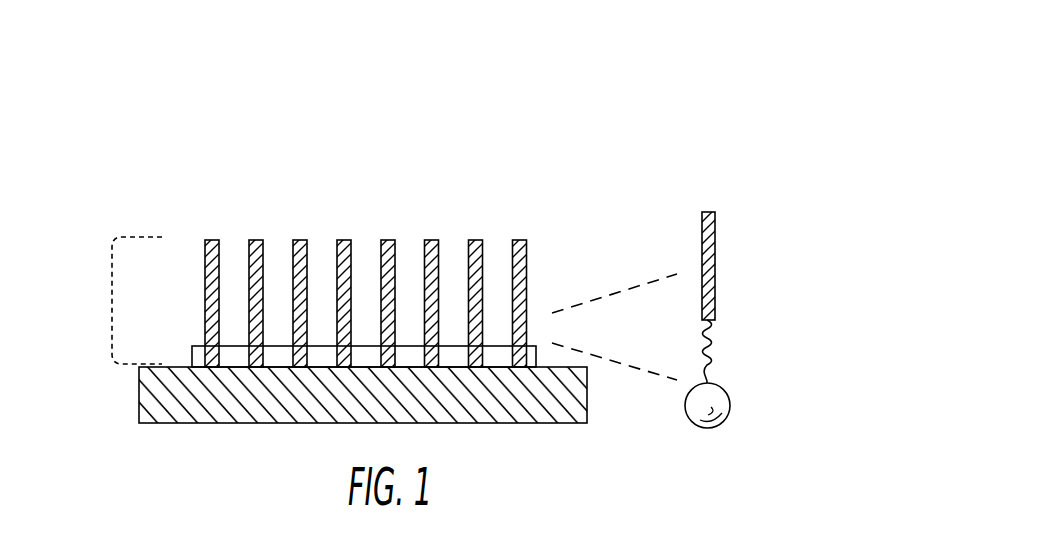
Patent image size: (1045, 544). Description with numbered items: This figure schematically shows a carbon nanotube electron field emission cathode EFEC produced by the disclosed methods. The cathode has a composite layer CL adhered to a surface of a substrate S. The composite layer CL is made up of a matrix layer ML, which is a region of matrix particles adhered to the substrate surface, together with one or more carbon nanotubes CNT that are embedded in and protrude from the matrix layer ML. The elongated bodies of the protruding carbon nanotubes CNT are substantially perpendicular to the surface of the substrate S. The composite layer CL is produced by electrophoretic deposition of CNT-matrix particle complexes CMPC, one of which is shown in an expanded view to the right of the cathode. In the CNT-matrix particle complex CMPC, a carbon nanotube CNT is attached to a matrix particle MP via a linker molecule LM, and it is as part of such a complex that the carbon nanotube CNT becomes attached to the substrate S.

The electron field emission cathode EFEC is at (312, 259).
The carbon nanotube CNT is at (357, 218).
The matrix layer ML is at (193, 344).
The composite layer CL is at (111, 301).
The substrate S is at (107, 399).
The CNT-matrix particle complex CMPC is at (742, 335).
The linker molecule LM is at (710, 363).
The matrix particle MP is at (732, 404).